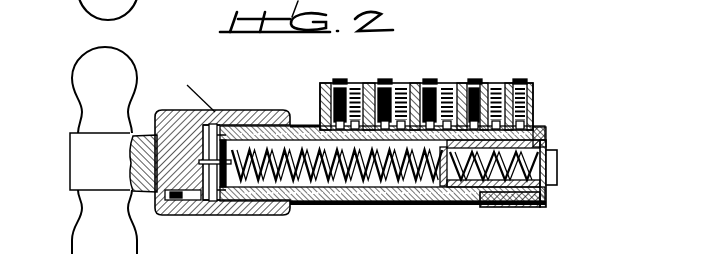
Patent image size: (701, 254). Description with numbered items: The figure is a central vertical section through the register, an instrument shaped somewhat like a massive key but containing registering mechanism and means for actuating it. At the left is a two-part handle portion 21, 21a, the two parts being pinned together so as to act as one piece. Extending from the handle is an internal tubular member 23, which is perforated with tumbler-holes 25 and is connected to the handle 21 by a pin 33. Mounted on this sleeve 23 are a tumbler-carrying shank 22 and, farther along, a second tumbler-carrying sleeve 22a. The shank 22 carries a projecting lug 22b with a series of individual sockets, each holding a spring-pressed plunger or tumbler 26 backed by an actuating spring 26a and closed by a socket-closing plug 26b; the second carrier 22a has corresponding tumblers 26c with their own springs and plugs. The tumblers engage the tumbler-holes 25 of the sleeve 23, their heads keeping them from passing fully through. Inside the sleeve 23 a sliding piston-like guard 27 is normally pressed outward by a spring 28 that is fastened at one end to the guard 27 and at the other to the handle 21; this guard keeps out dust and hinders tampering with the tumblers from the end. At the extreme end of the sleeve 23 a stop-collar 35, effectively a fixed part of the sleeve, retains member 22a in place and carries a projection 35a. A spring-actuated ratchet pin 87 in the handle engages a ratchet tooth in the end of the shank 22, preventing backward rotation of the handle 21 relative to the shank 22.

The handle portion 21 is at (163, 110).
The handle portion 21a is at (240, 112).
The tumbler-carrying shank 22 is at (333, 203).
The tumbler-carrying sleeve 22a is at (500, 207).
The projecting lug 22b is at (378, 84).
The tubular member 23 is at (292, 205).
The tumbler-holes 25 is at (447, 205).
The spring-pressed plungers or tumblers 26 is at (325, 118).
The actuating spring 26a is at (336, 87).
The socket-closing plug 26b is at (387, 87).
The tumblers 26c is at (540, 130).
The sliding piston-like guard 27 is at (505, 207).
The spring 28 is at (360, 172).
The pin 33 is at (237, 215).
The stop-collar 35 is at (540, 206).
The projection 35a is at (557, 172).
The spring-actuated ratchet pin 87 is at (180, 217).